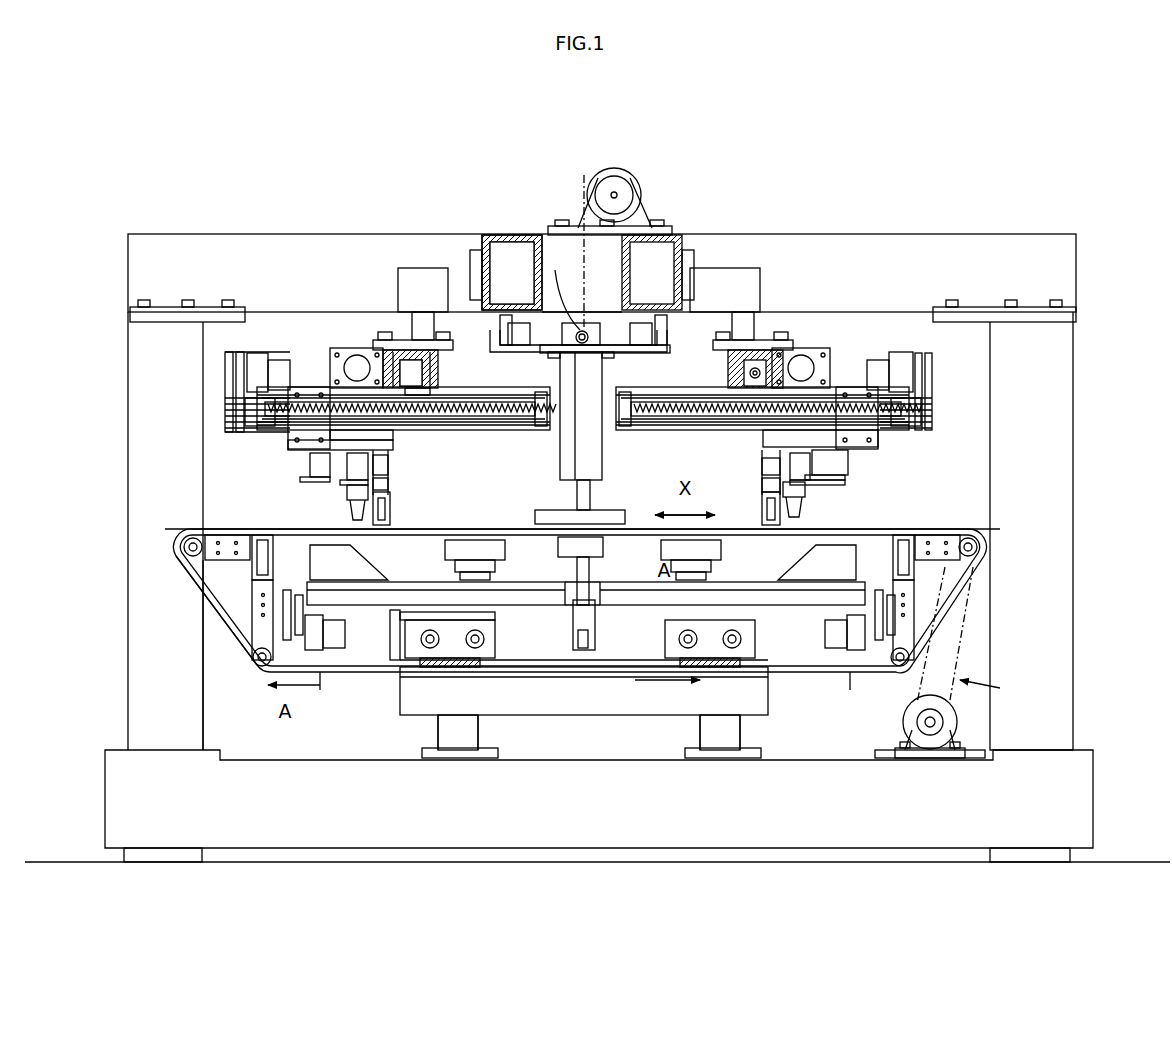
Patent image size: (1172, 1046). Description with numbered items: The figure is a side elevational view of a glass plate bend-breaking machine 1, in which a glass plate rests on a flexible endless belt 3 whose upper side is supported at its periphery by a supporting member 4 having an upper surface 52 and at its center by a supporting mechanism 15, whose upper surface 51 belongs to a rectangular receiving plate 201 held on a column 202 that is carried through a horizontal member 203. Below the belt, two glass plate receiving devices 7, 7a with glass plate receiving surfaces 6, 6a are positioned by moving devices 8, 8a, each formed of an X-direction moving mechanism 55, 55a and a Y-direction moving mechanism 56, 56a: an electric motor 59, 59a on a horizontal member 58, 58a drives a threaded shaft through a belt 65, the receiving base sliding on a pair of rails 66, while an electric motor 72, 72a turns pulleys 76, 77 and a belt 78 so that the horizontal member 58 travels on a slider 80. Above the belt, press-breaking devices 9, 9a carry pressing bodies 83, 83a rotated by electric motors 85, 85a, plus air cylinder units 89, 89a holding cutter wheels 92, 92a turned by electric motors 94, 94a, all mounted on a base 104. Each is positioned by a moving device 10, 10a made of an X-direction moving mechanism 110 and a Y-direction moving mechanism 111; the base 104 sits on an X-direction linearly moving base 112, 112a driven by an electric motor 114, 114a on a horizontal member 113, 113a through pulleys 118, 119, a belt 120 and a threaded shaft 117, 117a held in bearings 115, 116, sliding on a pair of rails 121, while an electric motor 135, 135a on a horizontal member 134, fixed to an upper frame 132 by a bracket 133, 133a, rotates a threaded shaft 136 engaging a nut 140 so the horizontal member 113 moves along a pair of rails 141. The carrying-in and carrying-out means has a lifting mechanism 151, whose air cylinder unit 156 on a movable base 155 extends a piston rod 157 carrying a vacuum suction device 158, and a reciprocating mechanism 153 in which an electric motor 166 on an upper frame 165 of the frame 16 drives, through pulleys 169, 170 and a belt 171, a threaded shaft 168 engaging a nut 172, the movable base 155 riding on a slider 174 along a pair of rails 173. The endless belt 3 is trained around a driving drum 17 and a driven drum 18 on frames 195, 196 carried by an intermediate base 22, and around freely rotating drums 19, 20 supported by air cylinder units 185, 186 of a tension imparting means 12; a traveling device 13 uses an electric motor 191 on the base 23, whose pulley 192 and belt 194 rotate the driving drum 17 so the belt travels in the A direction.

The glass plate bend-breaking machine 1 is at (1085, 440).
The flexible endless belt 3 is at (885, 530).
The supporting member 4 is at (273, 551).
The glass plate receiving surface 6 is at (442, 546).
The glass plate receiving surface 6a is at (705, 550).
The glass plate receiving device 7 is at (465, 560).
The glass plate receiving device 7a is at (770, 562).
The moving device 8 is at (380, 670).
The moving device 8a is at (820, 648).
The press-breaking device 9 is at (395, 480).
The press-breaking device 9a is at (762, 465).
The moving device 10 is at (322, 358).
The moving device 10a is at (822, 340).
The tension imparting means 12 is at (895, 672).
The traveling device 13 is at (1000, 686).
The supporting mechanism 15 is at (572, 612).
The frame 16 is at (1078, 732).
The driving drum 17 is at (978, 540).
The driven drum 18 is at (185, 575).
The freely rotating drum 19 is at (900, 666).
The freely rotating drum 20 is at (270, 668).
The intermediate base 22 is at (572, 715).
The base 23 is at (1090, 805).
The upper surface 51 is at (505, 528).
The upper surface 52 is at (250, 535).
The X-direction moving mechanism 55 is at (318, 615).
The X-direction moving mechanism 55a is at (857, 615).
The Y-direction moving mechanism 56 is at (405, 650).
The Y-direction moving mechanism 56a is at (663, 640).
The horizontal member 58 is at (462, 582).
The horizontal member 58a is at (640, 582).
The electric motor 59 is at (325, 640).
The electric motor 59a is at (832, 640).
The belt 65 is at (262, 635).
The pair of rails 66 is at (555, 545).
The electric motor 72 is at (478, 650).
The electric motor 72a is at (680, 655).
The pulley 76 is at (498, 620).
The pulley 77 is at (412, 715).
The belt 78 is at (445, 667).
The slider 80 is at (405, 645).
The pressing body 83 is at (390, 508).
The pressing body 83a is at (762, 510).
The electric motor 85 is at (390, 468).
The electric motor 85a is at (762, 480).
The air cylinder unit 89 is at (345, 478).
The air cylinder unit 89a is at (848, 483).
The cutter wheel 92 is at (358, 507).
The cutter wheel 92a is at (805, 508).
The electric motor 94 is at (312, 465).
The electric motor 94a is at (850, 462).
The base 104 is at (380, 450).
The X-direction moving mechanism 110 is at (245, 435).
The Y-direction moving mechanism 111 is at (440, 370).
The X-direction linearly moving base 112 is at (305, 430).
The X-direction linearly moving base 112a is at (860, 420).
The horizontal member 113 is at (522, 428).
The horizontal member 113a is at (690, 395).
The electric motor 114 is at (258, 355).
The electric motor 114a is at (900, 360).
The bearing 115 is at (225, 406).
The bearing 116 is at (540, 410).
The threaded shaft 117 is at (478, 420).
The threaded shaft 117a is at (690, 425).
The pulley 118 is at (225, 350).
The pulley 119 is at (245, 433).
The belt 120 is at (236, 378).
The pair of rails 121 is at (500, 408).
The upper frame 132 is at (510, 235).
The bracket 133 is at (420, 268).
The bracket 133a is at (765, 288).
The horizontal member 134 is at (405, 340).
The electric motor 135 is at (350, 358).
The electric motor 135a is at (805, 365).
The threaded shaft 136 is at (410, 352).
The nut 140 is at (425, 365).
The pair of rails 141 is at (400, 355).
The lifting mechanism 151 is at (605, 455).
The reciprocating mechanism 153 is at (652, 215).
The movable base 155 is at (632, 353).
The air cylinder unit 156 is at (590, 448).
The piston rod 157 is at (578, 497).
The vacuum suction device 158 is at (605, 512).
The upper frame 165 is at (828, 252).
The electric motor 166 is at (634, 176).
The threaded shaft 168 is at (584, 330).
The pulley 169 is at (613, 190).
The pulley 170 is at (570, 320).
The belt 171 is at (584, 250).
The nut 172 is at (615, 335).
The pair of rails 173 is at (500, 330).
The slider 174 is at (495, 345).
The air cylinder unit 185 is at (910, 635).
The air cylinder unit 186 is at (255, 665).
The electric motor 191 is at (945, 745).
The pulley 192 is at (925, 740).
The belt 194 is at (975, 600).
The frame 195 is at (935, 535).
The frame 196 is at (190, 536).
The rectangular receiving plate 201 is at (560, 575).
The column 202 is at (592, 605).
The horizontal member 203 is at (590, 660).